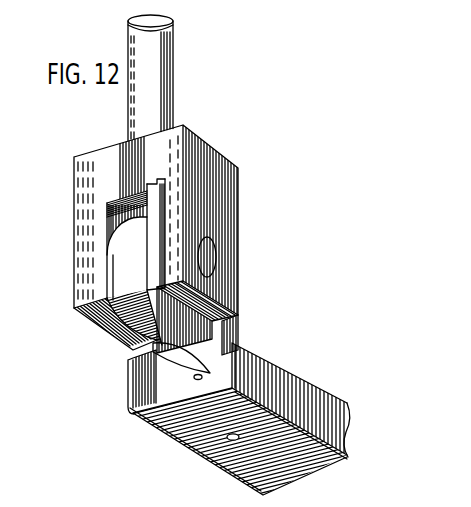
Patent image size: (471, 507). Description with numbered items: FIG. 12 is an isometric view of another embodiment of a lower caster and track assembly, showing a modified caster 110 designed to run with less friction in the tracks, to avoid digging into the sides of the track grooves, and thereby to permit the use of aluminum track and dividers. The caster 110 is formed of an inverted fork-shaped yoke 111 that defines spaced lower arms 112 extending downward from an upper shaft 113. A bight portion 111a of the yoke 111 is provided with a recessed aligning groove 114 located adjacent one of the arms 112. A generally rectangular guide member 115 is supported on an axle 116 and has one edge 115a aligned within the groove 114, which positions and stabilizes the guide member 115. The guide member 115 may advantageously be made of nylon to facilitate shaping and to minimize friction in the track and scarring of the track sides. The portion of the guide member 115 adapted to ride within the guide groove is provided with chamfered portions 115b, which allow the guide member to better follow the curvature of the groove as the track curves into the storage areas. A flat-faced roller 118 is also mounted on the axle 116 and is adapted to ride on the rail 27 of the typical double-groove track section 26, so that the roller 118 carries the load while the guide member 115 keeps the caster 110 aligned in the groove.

The caster 110 is at (216, 146).
The yoke 111 is at (226, 220).
The bight portion 111a is at (107, 153).
The lower arms 112 is at (227, 291).
The upper shaft 113 is at (161, 73).
The aligning groove 114 is at (158, 184).
The guide member 115 is at (228, 306).
The edge of guide member 115a is at (155, 192).
The chamfered portions 115b is at (235, 362).
The axle 116 is at (212, 262).
The flat-faced roller 118 is at (118, 262).
The double-groove track section 26 is at (330, 418).
The rail 27 is at (160, 388).